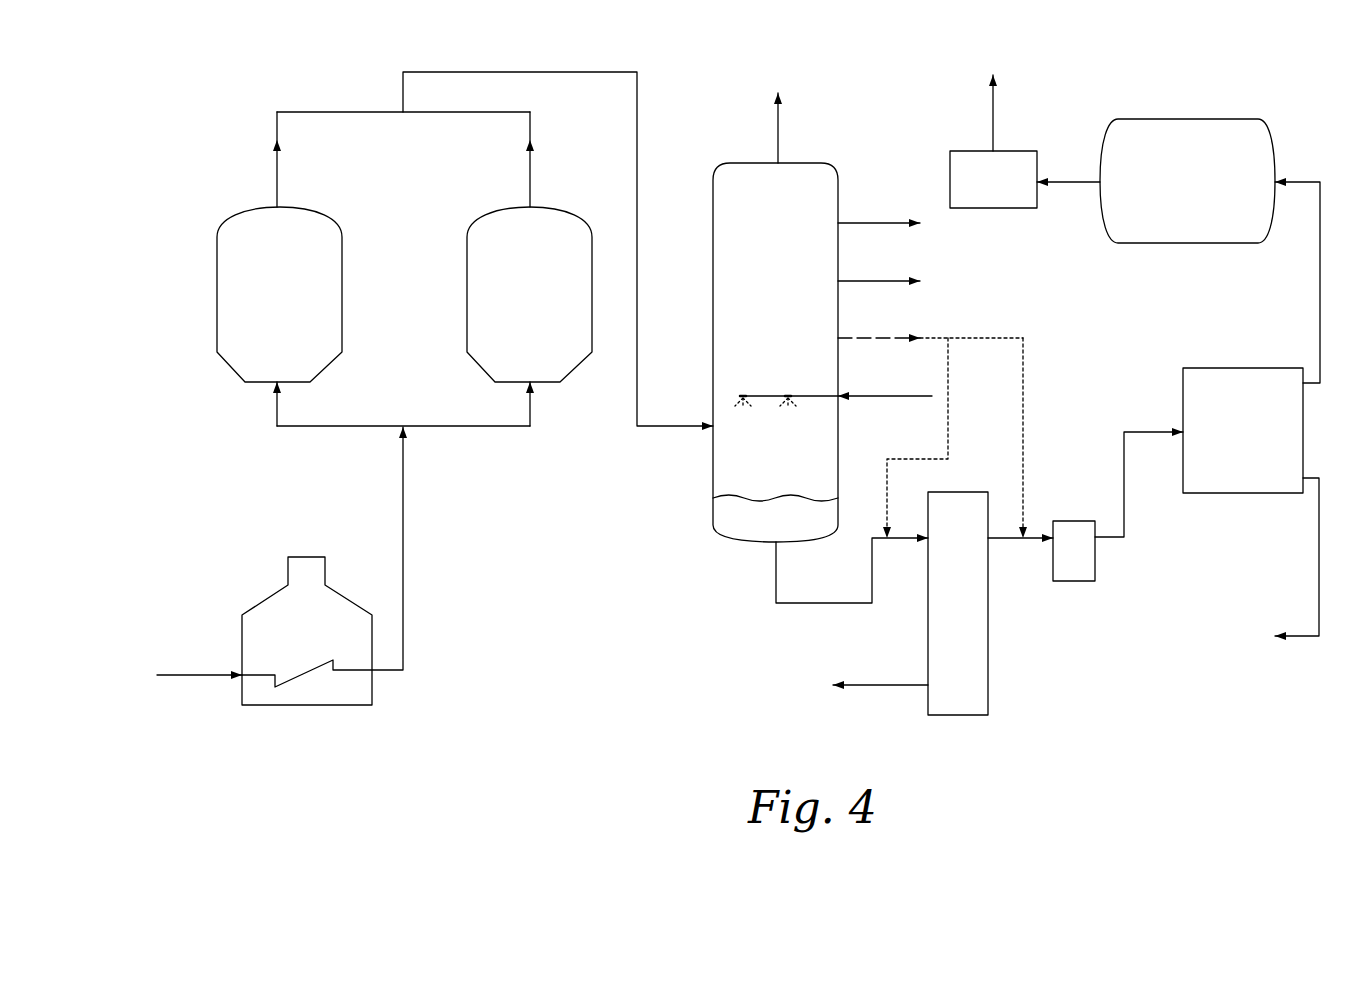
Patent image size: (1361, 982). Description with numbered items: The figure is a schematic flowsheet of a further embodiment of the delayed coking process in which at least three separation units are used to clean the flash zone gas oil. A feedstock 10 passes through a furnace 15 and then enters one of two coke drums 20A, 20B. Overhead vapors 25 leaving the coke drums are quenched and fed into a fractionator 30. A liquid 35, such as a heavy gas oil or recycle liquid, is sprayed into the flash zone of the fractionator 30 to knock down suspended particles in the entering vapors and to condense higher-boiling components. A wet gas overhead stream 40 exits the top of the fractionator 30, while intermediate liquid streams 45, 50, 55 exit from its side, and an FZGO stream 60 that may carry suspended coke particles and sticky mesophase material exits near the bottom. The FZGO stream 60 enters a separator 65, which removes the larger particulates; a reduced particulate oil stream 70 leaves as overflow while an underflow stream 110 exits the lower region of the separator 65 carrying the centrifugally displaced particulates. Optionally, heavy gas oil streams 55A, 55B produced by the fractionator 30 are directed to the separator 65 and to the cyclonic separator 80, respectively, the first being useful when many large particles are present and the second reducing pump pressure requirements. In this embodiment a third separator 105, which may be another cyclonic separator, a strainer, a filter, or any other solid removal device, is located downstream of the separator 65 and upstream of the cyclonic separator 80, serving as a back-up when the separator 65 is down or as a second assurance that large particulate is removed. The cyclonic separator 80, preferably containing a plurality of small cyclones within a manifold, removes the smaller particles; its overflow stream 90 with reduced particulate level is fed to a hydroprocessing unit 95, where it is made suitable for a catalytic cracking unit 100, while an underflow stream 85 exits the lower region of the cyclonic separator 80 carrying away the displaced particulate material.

The feedstock 10 is at (193, 676).
The furnace 15 is at (268, 598).
The coke drum 20A is at (217, 272).
The coke drum 20B is at (467, 272).
The overhead vapors 25 is at (543, 72).
The fractionator 30 is at (805, 163).
The liquid 35 is at (882, 397).
The wet gas overhead stream 40 is at (776, 138).
The intermediate liquid stream 45 is at (882, 224).
The intermediate liquid stream 50 is at (882, 282).
The intermediate liquid stream 55 is at (882, 339).
The heavy gas oil stream 55A is at (949, 408).
The heavy gas oil stream 55B is at (1025, 408).
The FZGO stream 60 is at (775, 571).
The separator 65 is at (988, 673).
The reduced particulate oil stream 70 is at (998, 540).
The cyclonic separator 80 is at (1210, 368).
The underflow stream 85 is at (1317, 562).
The overflow stream 90 is at (1318, 312).
The hydroprocessing unit 95 is at (1185, 118).
The catalytic cracking unit 100 is at (1022, 150).
The third separator 105 is at (1078, 582).
The underflow stream 110 is at (862, 686).